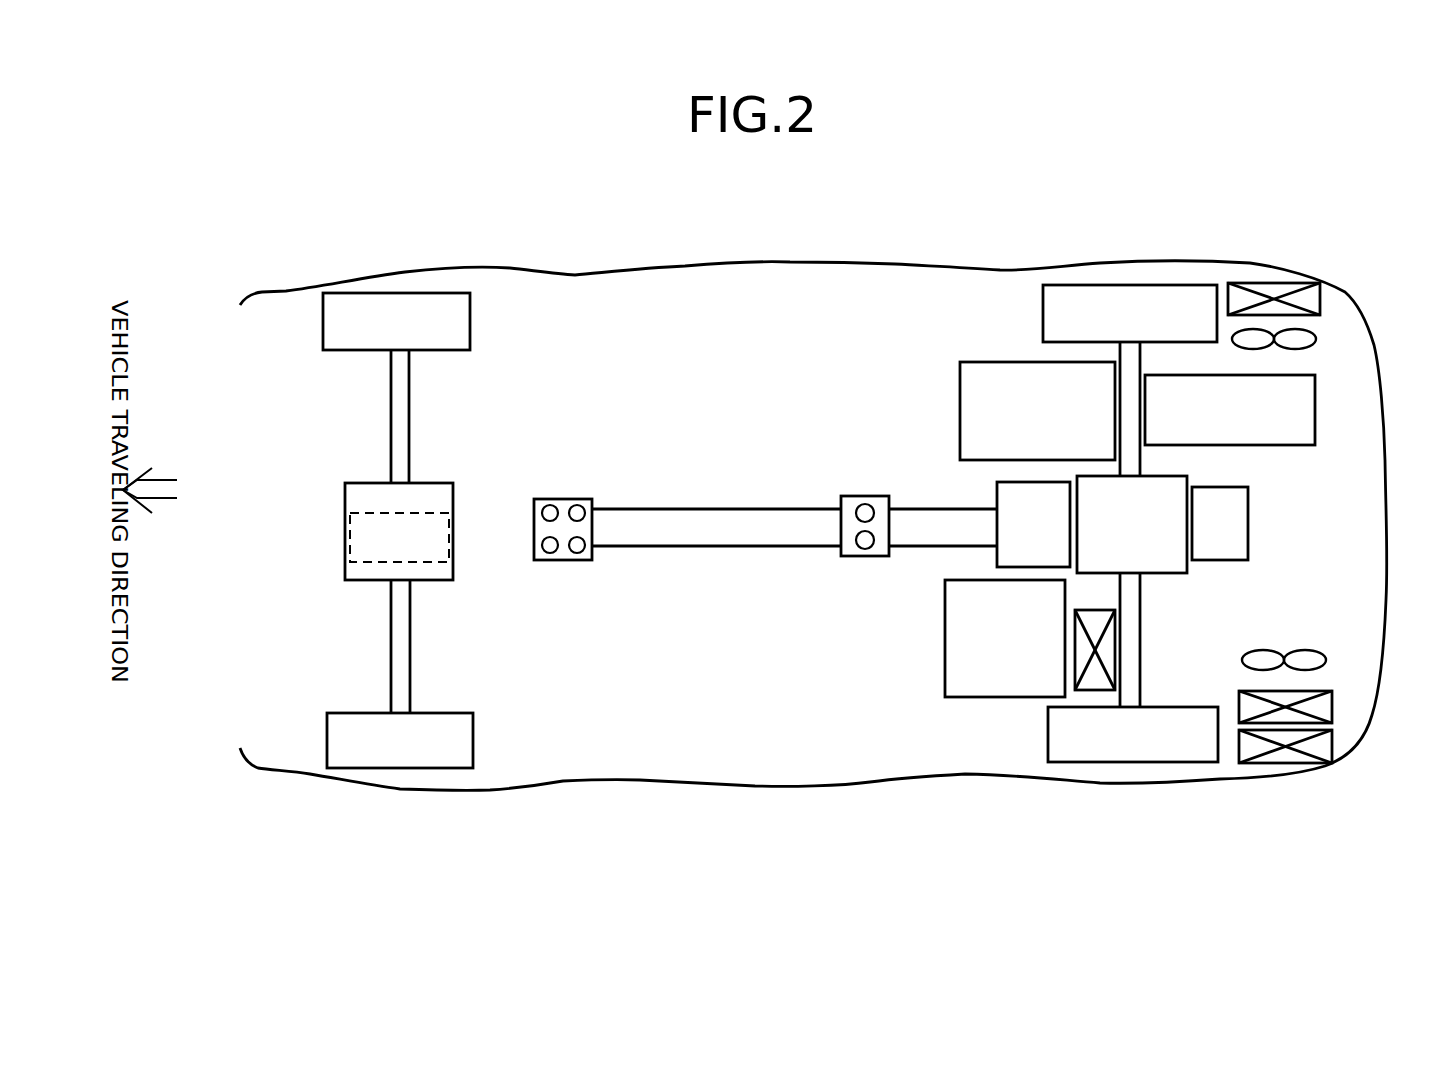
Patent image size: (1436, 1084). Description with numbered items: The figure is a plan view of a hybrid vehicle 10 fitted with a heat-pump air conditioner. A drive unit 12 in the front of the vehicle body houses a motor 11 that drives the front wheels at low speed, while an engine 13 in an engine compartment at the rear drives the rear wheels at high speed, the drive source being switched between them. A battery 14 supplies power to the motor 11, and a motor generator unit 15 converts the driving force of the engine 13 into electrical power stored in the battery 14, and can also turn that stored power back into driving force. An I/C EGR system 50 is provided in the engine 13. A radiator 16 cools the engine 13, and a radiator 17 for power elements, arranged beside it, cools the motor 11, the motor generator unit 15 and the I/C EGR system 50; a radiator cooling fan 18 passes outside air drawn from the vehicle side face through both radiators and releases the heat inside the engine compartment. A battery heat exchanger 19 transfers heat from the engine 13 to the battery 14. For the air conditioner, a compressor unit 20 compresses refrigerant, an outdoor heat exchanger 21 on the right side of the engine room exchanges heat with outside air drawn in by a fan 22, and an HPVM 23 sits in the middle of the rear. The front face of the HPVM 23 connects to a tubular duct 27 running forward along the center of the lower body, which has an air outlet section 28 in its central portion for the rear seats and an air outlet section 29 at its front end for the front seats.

The hybrid vehicle 10 is at (1258, 252).
The motor 11 is at (425, 511).
The drive unit 12 is at (344, 551).
The engine 13 is at (1178, 573).
The battery 14 is at (945, 659).
The motor generator unit 15 is at (960, 396).
The radiator 16 is at (1332, 702).
The radiator for power elements 17 is at (1332, 745).
The radiator cooling fan 18 is at (1303, 650).
The battery heat exchanger 19 is at (1115, 656).
The compressor unit 20 is at (1315, 421).
The outdoor heat exchanger 21 is at (1318, 305).
The fan 22 is at (1300, 347).
The HPVM 23 is at (997, 490).
The duct 27 is at (918, 548).
The air outlet section 28 is at (857, 558).
The air outlet section 29 is at (572, 562).
The I/C EGR system 50 is at (1248, 504).